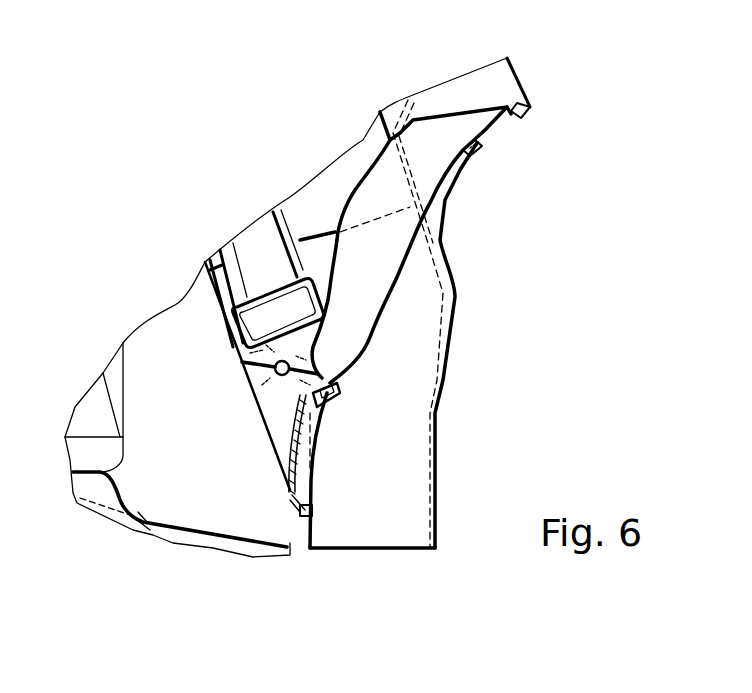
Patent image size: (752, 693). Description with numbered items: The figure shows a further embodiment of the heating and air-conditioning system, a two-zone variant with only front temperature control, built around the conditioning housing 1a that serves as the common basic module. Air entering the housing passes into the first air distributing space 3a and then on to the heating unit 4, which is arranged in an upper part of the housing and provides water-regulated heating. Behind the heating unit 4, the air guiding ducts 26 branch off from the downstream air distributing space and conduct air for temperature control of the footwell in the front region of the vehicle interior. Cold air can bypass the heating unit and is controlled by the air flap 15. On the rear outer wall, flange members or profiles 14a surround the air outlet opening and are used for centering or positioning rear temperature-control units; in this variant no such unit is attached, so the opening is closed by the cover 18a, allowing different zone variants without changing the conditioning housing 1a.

The conditioning housing 1a is at (150, 291).
The first air distributing space 3a is at (202, 430).
The heating unit 4 is at (248, 237).
The air guiding ducts 26 is at (330, 183).
The flange members or profiles 14a is at (480, 148).
The air flap 15 is at (280, 380).
The cover 18a is at (300, 433).